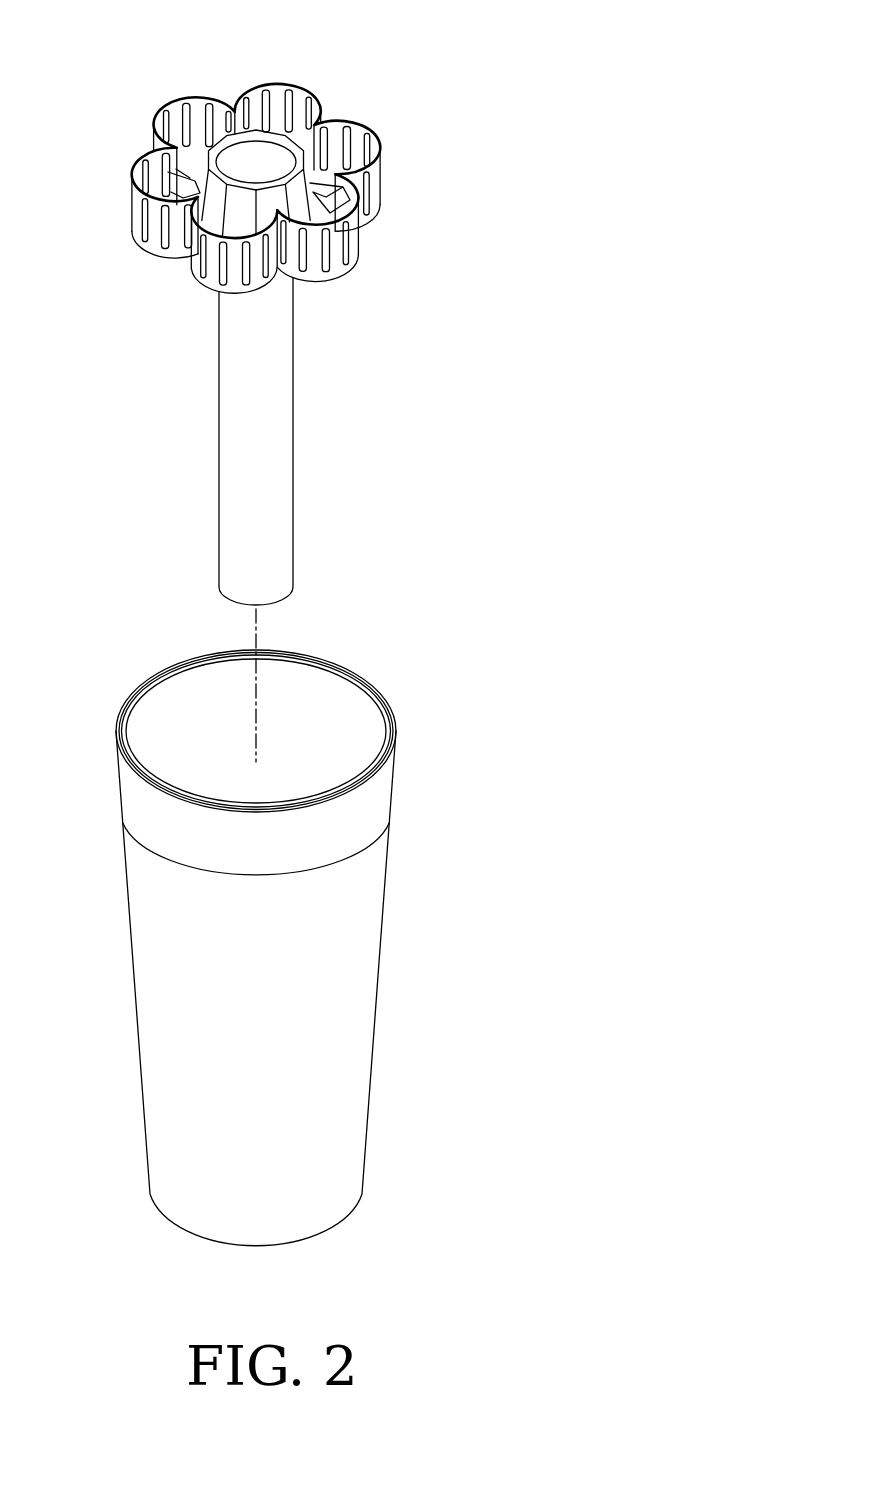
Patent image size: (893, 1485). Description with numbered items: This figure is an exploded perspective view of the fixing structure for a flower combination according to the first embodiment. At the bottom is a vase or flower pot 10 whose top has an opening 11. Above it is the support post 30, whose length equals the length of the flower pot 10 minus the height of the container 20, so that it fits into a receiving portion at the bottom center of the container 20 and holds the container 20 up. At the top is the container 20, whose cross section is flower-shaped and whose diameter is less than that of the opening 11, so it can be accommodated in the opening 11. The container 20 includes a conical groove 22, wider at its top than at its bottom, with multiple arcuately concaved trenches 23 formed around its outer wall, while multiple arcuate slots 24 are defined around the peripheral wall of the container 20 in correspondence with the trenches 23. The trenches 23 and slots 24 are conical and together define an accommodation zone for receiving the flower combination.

The flower pot 10 is at (367, 1092).
The opening 11 is at (365, 727).
The container 20 is at (393, 178).
The conical groove 22 is at (238, 153).
The arcuately concaved trenches 23 is at (277, 143).
The arcuate slots 24 is at (300, 100).
The support post 30 is at (236, 489).